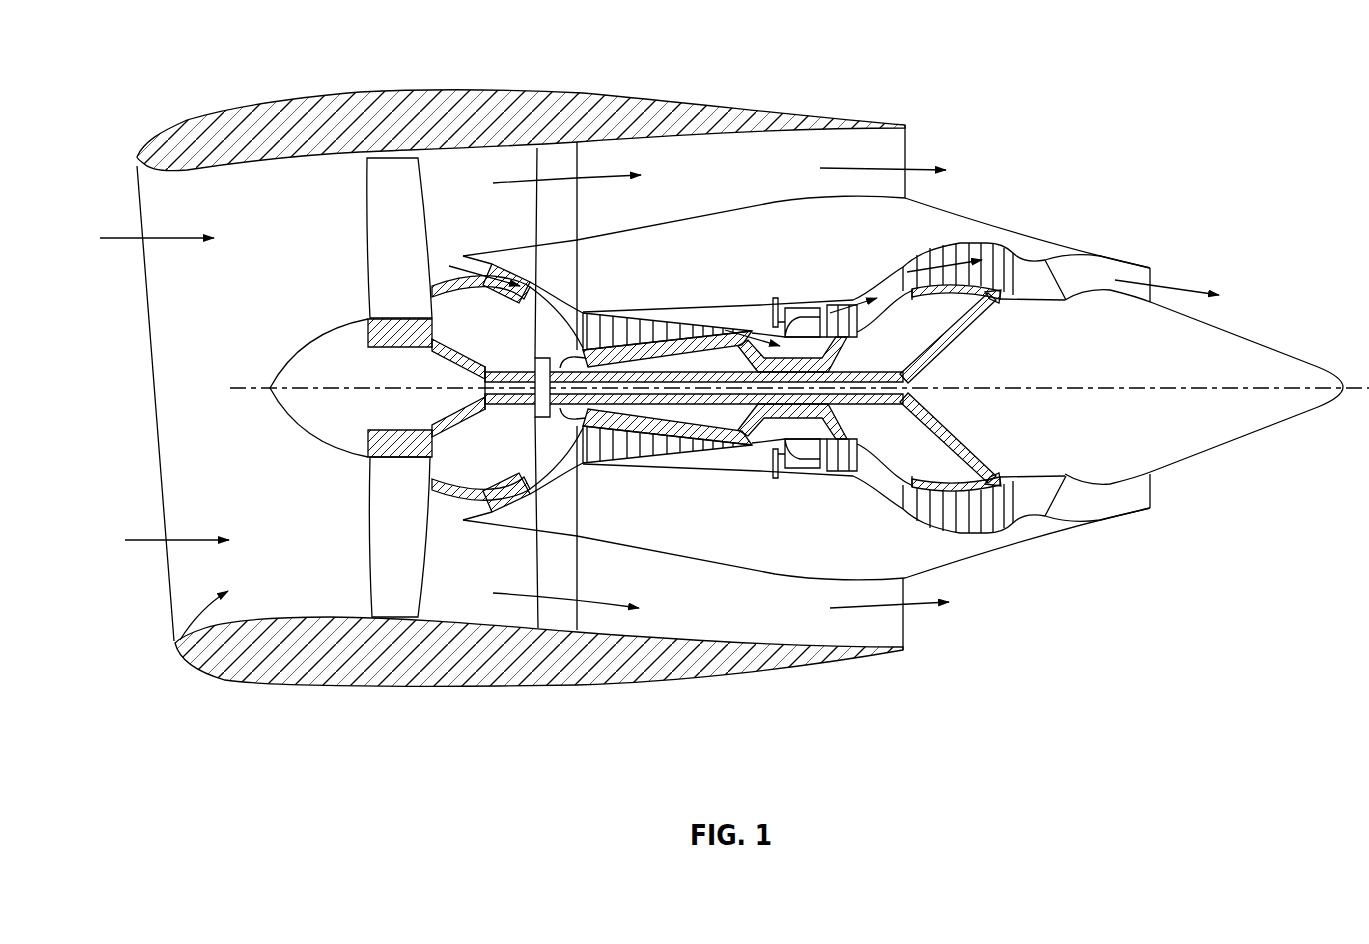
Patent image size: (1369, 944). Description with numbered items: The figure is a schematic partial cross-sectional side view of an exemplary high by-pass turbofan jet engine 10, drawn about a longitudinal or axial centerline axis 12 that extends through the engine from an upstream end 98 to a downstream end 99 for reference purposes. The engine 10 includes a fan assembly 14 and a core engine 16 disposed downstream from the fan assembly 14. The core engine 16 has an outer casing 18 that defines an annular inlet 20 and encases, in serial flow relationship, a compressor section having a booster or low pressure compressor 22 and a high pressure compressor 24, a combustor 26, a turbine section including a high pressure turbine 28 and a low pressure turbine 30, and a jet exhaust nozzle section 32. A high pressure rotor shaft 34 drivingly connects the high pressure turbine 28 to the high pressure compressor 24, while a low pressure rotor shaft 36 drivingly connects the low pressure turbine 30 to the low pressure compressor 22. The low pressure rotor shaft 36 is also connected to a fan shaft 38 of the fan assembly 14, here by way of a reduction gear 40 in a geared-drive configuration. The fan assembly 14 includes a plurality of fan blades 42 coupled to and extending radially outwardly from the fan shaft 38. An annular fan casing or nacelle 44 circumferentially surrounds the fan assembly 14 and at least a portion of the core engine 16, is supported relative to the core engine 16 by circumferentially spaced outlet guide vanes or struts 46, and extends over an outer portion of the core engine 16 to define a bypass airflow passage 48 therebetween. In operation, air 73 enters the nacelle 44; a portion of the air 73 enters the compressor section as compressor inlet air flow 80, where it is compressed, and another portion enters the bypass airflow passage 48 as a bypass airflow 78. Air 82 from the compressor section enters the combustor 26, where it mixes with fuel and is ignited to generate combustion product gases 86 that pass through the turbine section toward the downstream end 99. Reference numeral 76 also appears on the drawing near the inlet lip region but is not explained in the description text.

The high by-pass turbofan jet engine 10 is at (734, 367).
The axial centerline axis 12 is at (1110, 386).
The fan assembly 14 is at (459, 186).
The core engine 16 is at (777, 196).
The outer casing 18 is at (747, 570).
The annular inlet 20 is at (473, 507).
The low pressure compressor 22 is at (533, 452).
The high pressure compressor 24 is at (607, 452).
The combustor 26 is at (795, 458).
The high pressure turbine 28 is at (905, 458).
The low pressure turbine 30 is at (987, 537).
The jet exhaust nozzle section 32 is at (1067, 509).
The high pressure rotor shaft 34 is at (833, 355).
The low pressure rotor shaft 36 is at (942, 340).
The fan shaft 38 is at (432, 347).
The reduction gear 40 is at (536, 357).
The fan blades 42 is at (370, 248).
The nacelle 44 is at (372, 90).
The outlet guide vanes 46 is at (563, 155).
The bypass airflow passage 48 is at (720, 188).
The air 73 is at (192, 237).
The inlet lip airflow 76 is at (182, 632).
The bypass airflow 78 is at (590, 182).
The compressor inlet air flow 80 is at (468, 262).
The air from the compressor section 82 is at (600, 316).
The combustion product gases 86 is at (843, 303).
The upstream end 98 is at (140, 400).
The downstream end 99 is at (1367, 445).